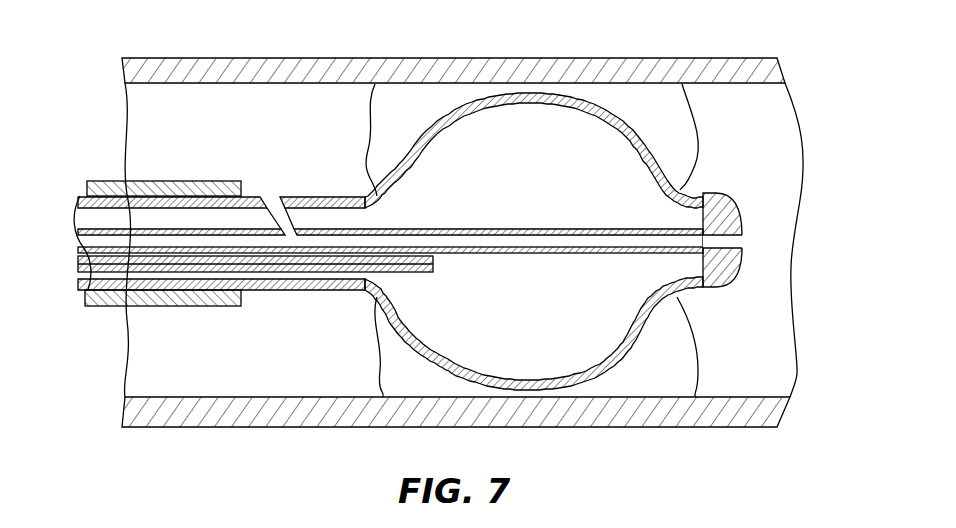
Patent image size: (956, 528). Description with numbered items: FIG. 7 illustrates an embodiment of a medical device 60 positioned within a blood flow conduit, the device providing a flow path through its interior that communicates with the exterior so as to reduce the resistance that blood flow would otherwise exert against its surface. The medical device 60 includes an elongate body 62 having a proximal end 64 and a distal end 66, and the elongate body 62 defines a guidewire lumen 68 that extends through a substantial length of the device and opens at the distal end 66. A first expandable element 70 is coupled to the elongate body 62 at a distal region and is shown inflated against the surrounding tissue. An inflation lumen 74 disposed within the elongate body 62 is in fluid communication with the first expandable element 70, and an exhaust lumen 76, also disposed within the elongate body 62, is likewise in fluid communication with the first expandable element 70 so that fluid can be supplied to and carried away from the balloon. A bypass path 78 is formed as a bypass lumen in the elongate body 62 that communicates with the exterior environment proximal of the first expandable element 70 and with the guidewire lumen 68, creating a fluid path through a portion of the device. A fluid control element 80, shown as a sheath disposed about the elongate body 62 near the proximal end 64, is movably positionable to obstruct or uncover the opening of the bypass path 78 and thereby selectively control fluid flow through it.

The medical device 60 is at (70, 168).
The elongate body 62 is at (318, 290).
The proximal end 64 is at (76, 222).
The distal end 66 is at (735, 214).
The guidewire lumen 68 is at (742, 241).
The first expandable element 70 is at (633, 128).
The inflation lumen 74 is at (437, 263).
The exhaust lumen 76 is at (352, 220).
The bypass path 78 is at (285, 228).
The fluid control element 80 is at (194, 181).